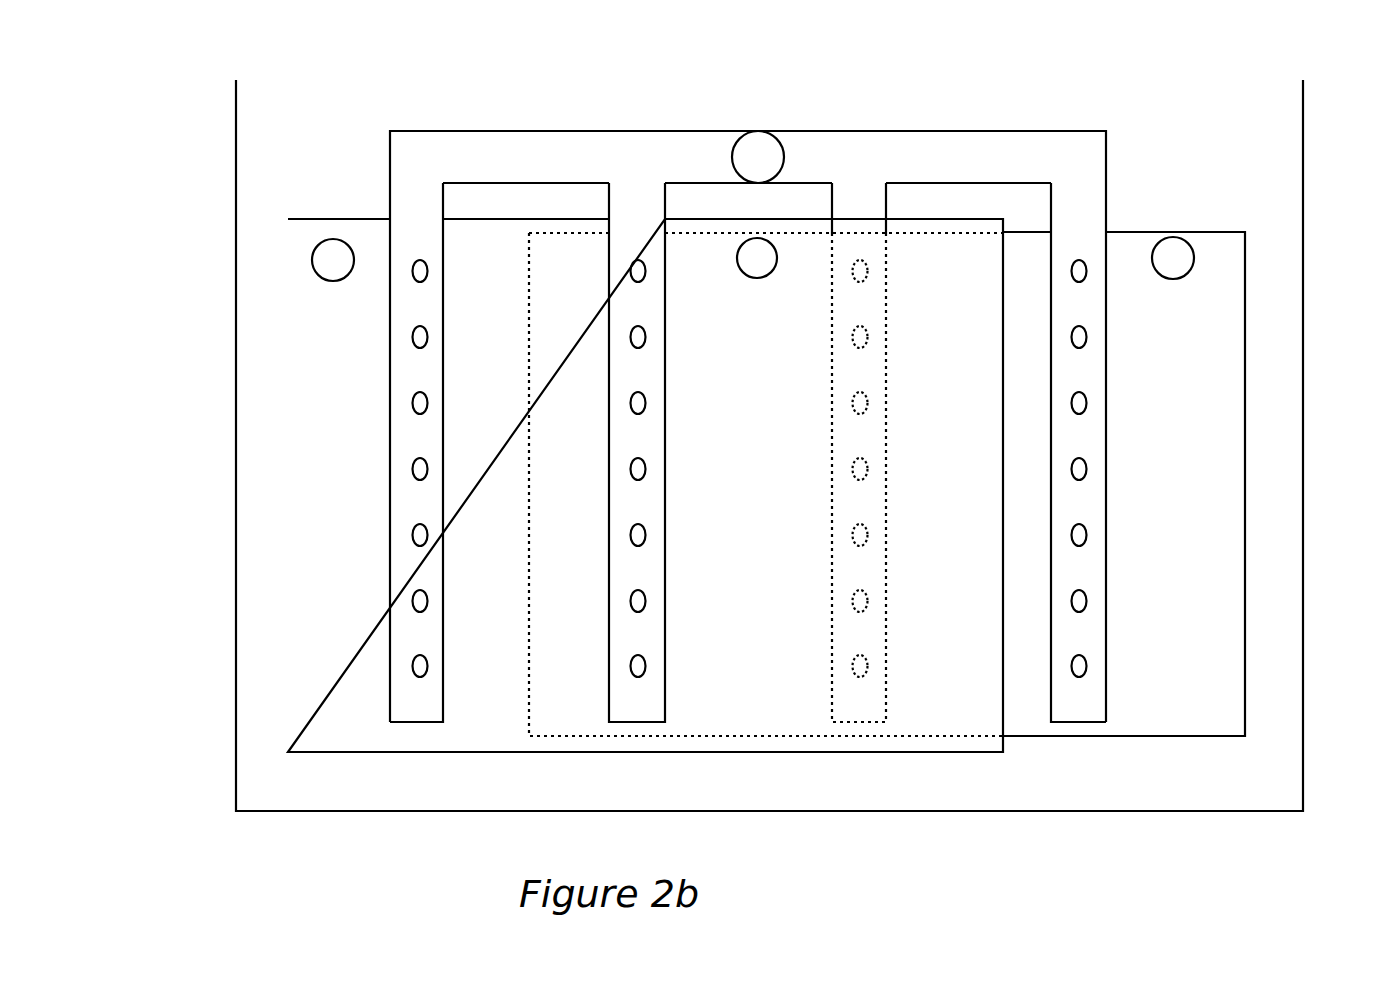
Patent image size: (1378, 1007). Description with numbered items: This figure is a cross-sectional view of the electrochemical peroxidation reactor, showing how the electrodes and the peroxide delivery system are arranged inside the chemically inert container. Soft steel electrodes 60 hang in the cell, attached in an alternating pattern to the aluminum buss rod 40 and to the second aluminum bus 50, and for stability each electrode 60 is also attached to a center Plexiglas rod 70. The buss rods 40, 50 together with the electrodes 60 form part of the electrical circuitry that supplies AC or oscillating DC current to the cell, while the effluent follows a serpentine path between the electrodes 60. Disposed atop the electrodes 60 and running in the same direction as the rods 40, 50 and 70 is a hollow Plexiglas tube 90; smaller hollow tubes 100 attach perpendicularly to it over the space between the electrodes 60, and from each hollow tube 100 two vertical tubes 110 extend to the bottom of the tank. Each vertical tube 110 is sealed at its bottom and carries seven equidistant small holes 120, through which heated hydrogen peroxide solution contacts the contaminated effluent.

The aluminum buss rod 40 is at (335, 262).
The second aluminum bus 50 is at (1181, 260).
The soft steel electrode 60 is at (333, 562).
The Plexiglas rod 70 is at (757, 258).
The hollow Plexiglas tube 90 is at (756, 140).
The smaller hollow tube 100 is at (748, 386).
The vertical tube 110 is at (748, 452).
The small hole 120 is at (750, 468).